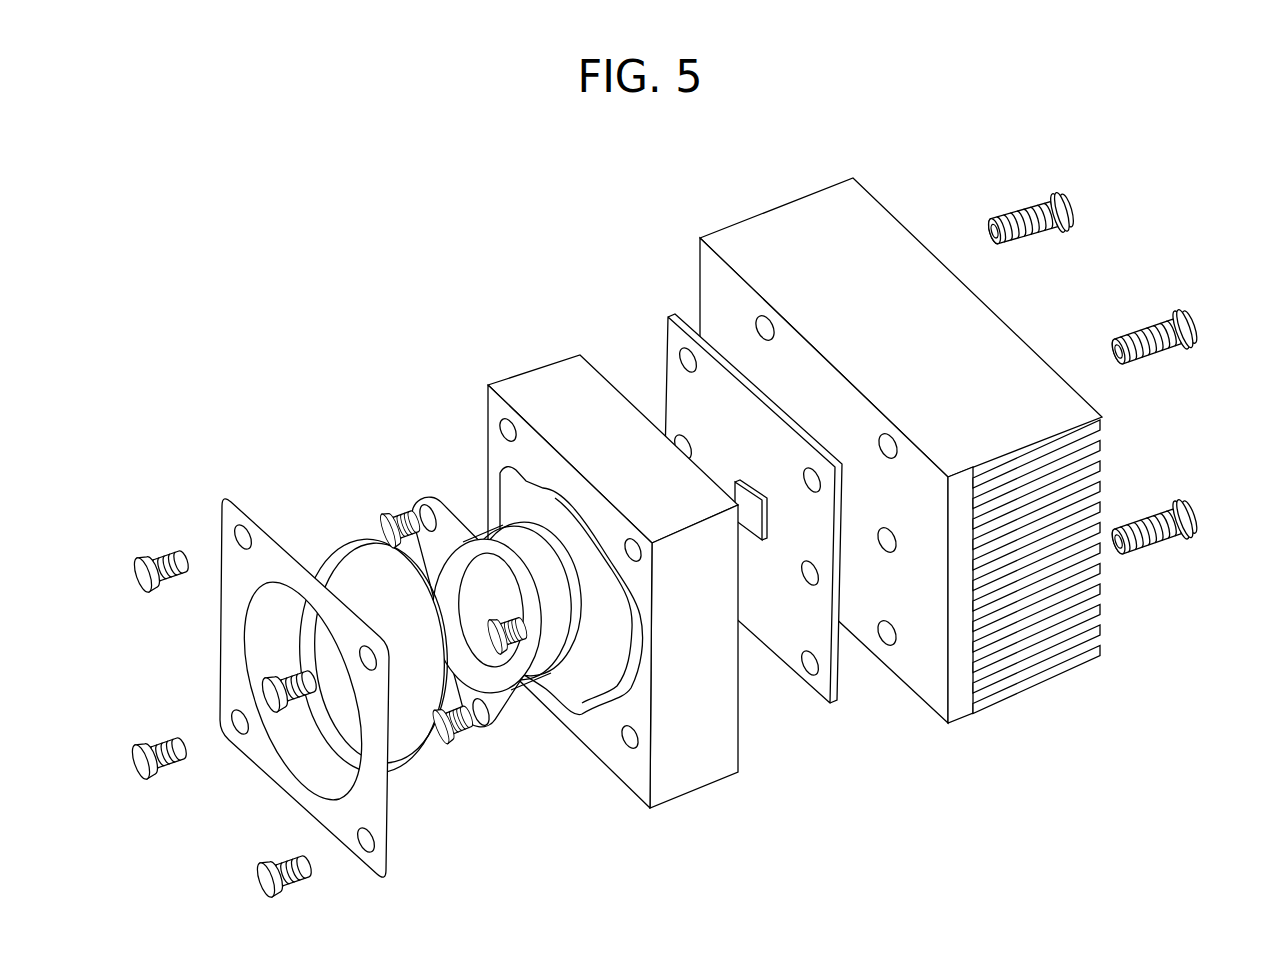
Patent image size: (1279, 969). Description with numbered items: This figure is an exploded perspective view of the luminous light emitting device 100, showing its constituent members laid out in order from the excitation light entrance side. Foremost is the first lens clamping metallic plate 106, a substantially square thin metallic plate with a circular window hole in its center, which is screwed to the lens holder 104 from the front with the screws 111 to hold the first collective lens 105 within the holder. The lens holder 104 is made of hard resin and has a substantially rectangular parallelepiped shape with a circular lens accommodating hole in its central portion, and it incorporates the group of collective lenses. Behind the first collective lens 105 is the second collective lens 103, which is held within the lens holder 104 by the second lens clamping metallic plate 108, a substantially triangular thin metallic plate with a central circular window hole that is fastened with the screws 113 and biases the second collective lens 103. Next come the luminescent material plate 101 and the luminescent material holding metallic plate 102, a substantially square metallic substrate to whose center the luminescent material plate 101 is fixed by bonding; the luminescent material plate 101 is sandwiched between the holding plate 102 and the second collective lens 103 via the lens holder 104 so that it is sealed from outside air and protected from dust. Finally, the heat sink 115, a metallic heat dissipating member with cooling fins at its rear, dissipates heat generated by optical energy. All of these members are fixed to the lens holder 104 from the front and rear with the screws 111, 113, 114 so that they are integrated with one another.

The luminous light emitting device 100 is at (340, 382).
The luminescent material plate 101 is at (750, 530).
The luminescent material holding metallic plate 102 is at (806, 608).
The second collective lens 103 is at (513, 558).
The lens holder 104 is at (690, 740).
The first collective lens 105 is at (352, 592).
The first lens clamping metallic plate 106 is at (238, 583).
The second lens clamping metallic plate 108 is at (437, 502).
The screws 111 is at (267, 698).
The screws 113 is at (490, 660).
The screws 114 is at (1068, 210).
The heat sink 115 is at (830, 245).